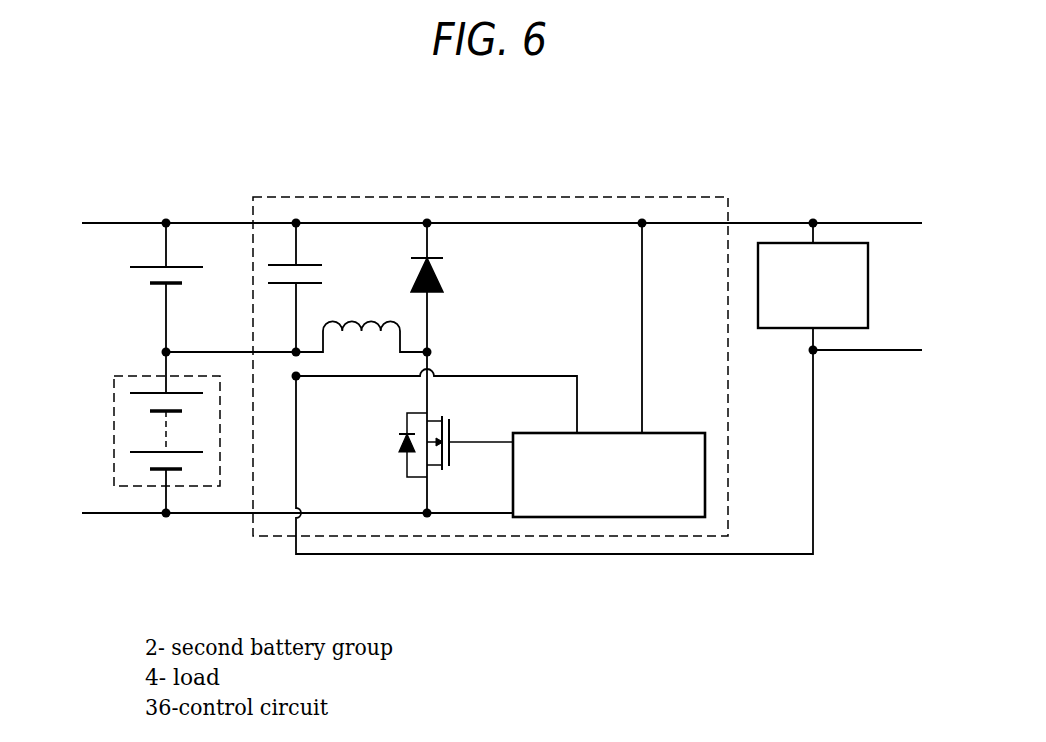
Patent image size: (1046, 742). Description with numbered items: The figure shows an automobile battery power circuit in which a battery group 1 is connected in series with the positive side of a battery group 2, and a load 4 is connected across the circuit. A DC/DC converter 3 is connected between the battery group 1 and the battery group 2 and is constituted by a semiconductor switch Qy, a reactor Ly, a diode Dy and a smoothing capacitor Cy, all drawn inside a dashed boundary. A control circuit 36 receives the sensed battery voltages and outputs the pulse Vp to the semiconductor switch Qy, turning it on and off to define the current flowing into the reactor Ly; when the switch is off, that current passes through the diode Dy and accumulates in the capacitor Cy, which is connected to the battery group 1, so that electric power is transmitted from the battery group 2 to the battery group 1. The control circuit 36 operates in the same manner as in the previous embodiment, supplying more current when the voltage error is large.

The battery group 1 is at (130, 266).
The battery group 2 is at (114, 430).
The DC/DC converter 3 is at (672, 197).
The load 4 is at (860, 286).
The control circuit 36 is at (610, 517).